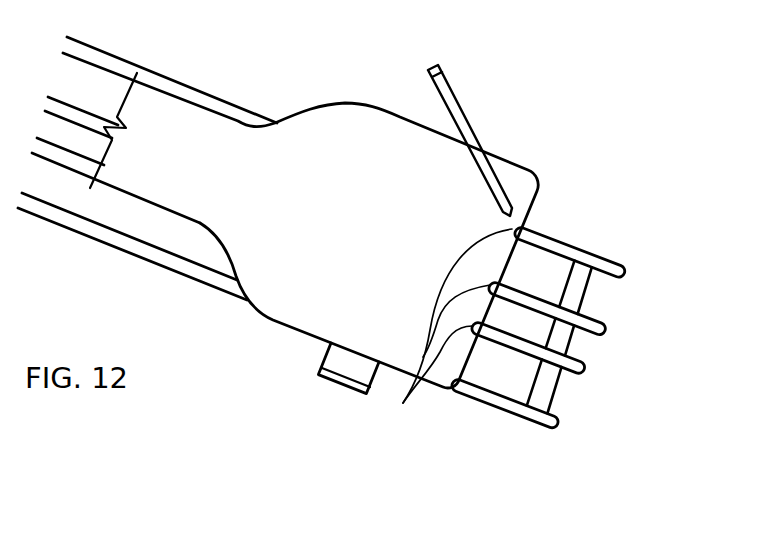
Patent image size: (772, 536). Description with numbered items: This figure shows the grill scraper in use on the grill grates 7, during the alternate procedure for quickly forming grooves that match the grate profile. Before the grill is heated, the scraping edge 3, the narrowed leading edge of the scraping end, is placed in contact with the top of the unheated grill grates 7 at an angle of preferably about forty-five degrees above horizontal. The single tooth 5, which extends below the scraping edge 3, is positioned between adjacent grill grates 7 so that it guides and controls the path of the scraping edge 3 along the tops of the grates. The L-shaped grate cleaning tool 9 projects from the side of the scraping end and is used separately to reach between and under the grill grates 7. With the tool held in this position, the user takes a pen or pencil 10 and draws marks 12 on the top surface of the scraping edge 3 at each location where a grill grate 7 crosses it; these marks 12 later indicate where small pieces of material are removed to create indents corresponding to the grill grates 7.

The scraping edge 3 is at (480, 322).
The tooth 5 is at (520, 322).
The grill grates 7 is at (630, 270).
The grate cleaning tool 9 is at (337, 394).
The pen or pencil 10 is at (463, 113).
The marks 12 is at (403, 403).